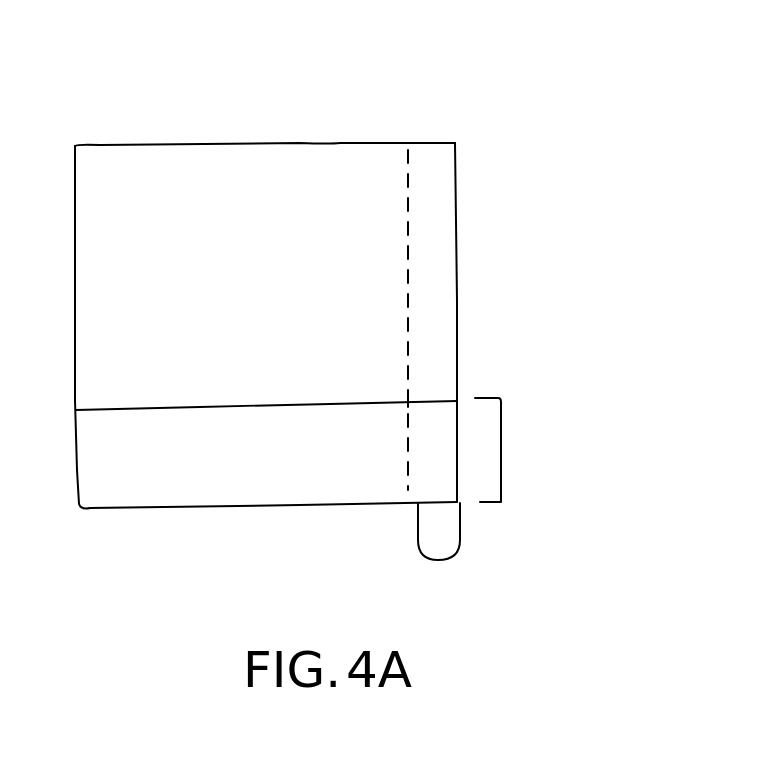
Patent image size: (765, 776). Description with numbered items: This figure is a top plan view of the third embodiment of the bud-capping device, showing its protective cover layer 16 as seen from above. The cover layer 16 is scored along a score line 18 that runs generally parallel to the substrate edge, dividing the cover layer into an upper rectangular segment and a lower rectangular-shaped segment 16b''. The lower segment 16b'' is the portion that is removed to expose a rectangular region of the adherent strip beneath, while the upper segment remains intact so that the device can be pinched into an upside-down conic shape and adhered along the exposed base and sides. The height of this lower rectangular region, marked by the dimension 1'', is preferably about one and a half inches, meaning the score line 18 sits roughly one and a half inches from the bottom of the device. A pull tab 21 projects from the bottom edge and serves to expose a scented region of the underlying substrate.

The cover layer 16 is at (272, 344).
The rectangular-shaped segment 16b'' is at (464, 355).
The score line 18 is at (411, 394).
The width of flap 1'' is at (505, 450).
The pull tab 21 is at (445, 560).